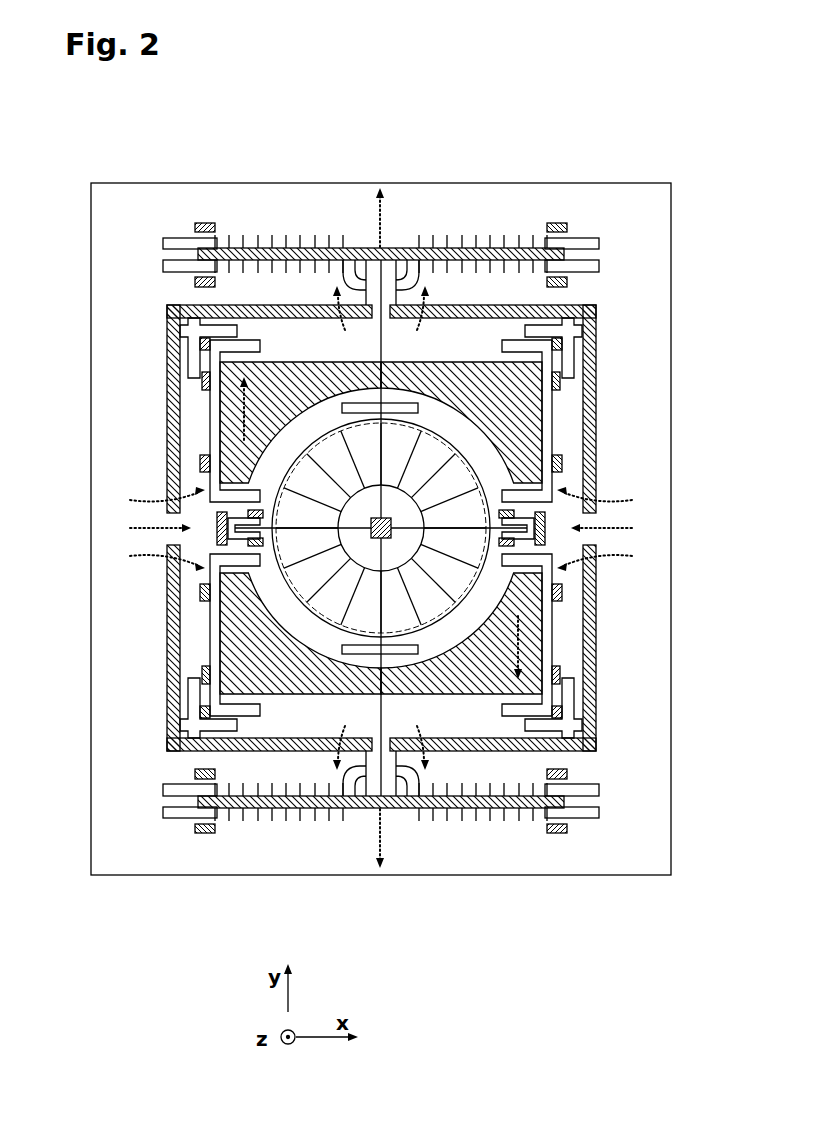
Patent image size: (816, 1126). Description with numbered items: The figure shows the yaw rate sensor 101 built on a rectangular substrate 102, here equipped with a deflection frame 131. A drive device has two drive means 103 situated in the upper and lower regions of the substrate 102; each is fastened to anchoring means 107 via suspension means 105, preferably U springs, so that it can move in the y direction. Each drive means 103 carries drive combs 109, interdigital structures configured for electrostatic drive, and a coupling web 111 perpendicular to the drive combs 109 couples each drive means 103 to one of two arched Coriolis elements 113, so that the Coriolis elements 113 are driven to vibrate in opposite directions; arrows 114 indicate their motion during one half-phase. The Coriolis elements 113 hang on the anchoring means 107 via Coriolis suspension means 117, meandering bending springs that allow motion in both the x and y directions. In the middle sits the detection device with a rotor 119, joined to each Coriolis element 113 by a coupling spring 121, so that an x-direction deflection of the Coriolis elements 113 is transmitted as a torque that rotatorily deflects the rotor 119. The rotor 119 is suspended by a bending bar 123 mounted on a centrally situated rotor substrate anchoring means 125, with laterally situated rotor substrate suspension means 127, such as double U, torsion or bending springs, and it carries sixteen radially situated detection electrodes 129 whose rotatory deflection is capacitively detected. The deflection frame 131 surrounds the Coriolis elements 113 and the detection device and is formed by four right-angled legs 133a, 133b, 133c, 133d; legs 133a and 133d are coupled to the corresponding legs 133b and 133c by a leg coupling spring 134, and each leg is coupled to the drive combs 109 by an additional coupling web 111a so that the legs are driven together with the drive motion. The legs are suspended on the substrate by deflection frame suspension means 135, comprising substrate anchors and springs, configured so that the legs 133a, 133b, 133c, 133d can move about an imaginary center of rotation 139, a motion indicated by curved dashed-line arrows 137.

The yaw rate sensor 101 is at (682, 139).
The substrate 102 is at (672, 186).
The drive means 103 is at (165, 243).
The suspension means 105 is at (203, 223).
The anchoring means 107 is at (205, 240).
The drive combs 109 is at (255, 250).
The coupling web 111 is at (445, 272).
The additional coupling web 111a is at (358, 285).
The Coriolis element 113 is at (290, 362).
The arrows 114 is at (377, 529).
The Coriolis suspension means 117 is at (212, 346).
The rotor 119 is at (218, 522).
The coupling spring 121 is at (418, 407).
The bending bar 123 is at (392, 540).
The rotor substrate anchoring means 125 is at (252, 545).
The rotor substrate suspension means 127 is at (542, 520).
The detection electrodes 129 is at (412, 590).
The deflection frame 131 is at (170, 410).
The leg 133a is at (538, 400).
The leg 133b is at (538, 645).
The leg 133c is at (224, 625).
The leg 133d is at (224, 430).
The leg coupling spring 134 is at (232, 535).
The deflection frame suspension means 135 is at (182, 331).
The curved dashed-line arrows 137 is at (468, 360).
The imaginary center of rotation 139 is at (168, 308).